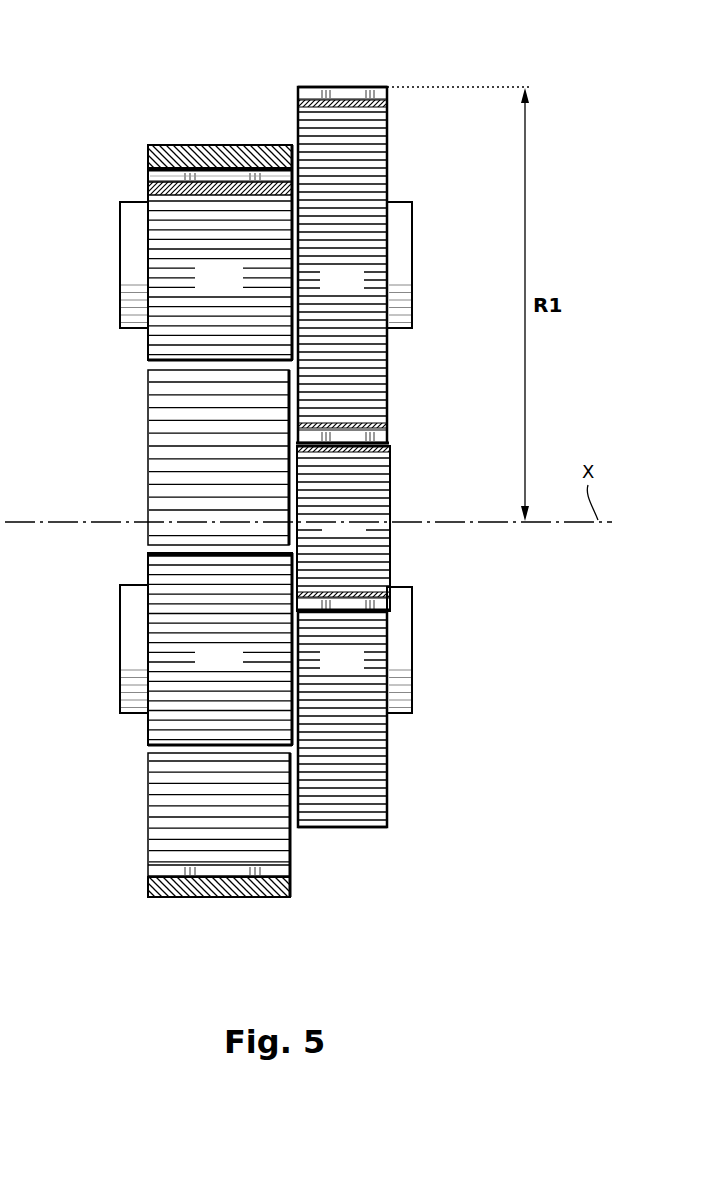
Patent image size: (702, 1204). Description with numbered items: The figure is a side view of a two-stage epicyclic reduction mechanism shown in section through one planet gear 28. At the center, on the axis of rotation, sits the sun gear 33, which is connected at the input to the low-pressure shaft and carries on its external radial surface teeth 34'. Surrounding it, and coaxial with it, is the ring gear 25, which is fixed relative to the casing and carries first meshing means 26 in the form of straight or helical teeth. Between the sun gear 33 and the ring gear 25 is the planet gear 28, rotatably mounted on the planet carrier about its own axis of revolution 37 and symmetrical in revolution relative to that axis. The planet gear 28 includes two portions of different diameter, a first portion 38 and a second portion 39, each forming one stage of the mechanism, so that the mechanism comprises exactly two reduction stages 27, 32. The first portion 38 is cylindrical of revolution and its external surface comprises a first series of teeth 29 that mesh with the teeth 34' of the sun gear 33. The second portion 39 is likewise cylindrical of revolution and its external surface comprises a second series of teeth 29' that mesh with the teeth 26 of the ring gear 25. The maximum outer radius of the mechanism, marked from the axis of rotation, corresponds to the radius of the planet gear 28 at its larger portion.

The ring gear 25 is at (148, 152).
The first meshing means 26 is at (177, 193).
The reduction stage 27 is at (340, 853).
The planet gear 28 is at (407, 149).
The first series of teeth 29 is at (342, 48).
The second series of teeth 29' is at (220, 131).
The reduction stage 32 is at (221, 917).
The sun gear 33 is at (343, 528).
The teeth of the sun gear 34' is at (388, 500).
The axis of revolution 37 is at (404, 262).
The first portion 38 is at (342, 457).
The second portion 39 is at (206, 445).